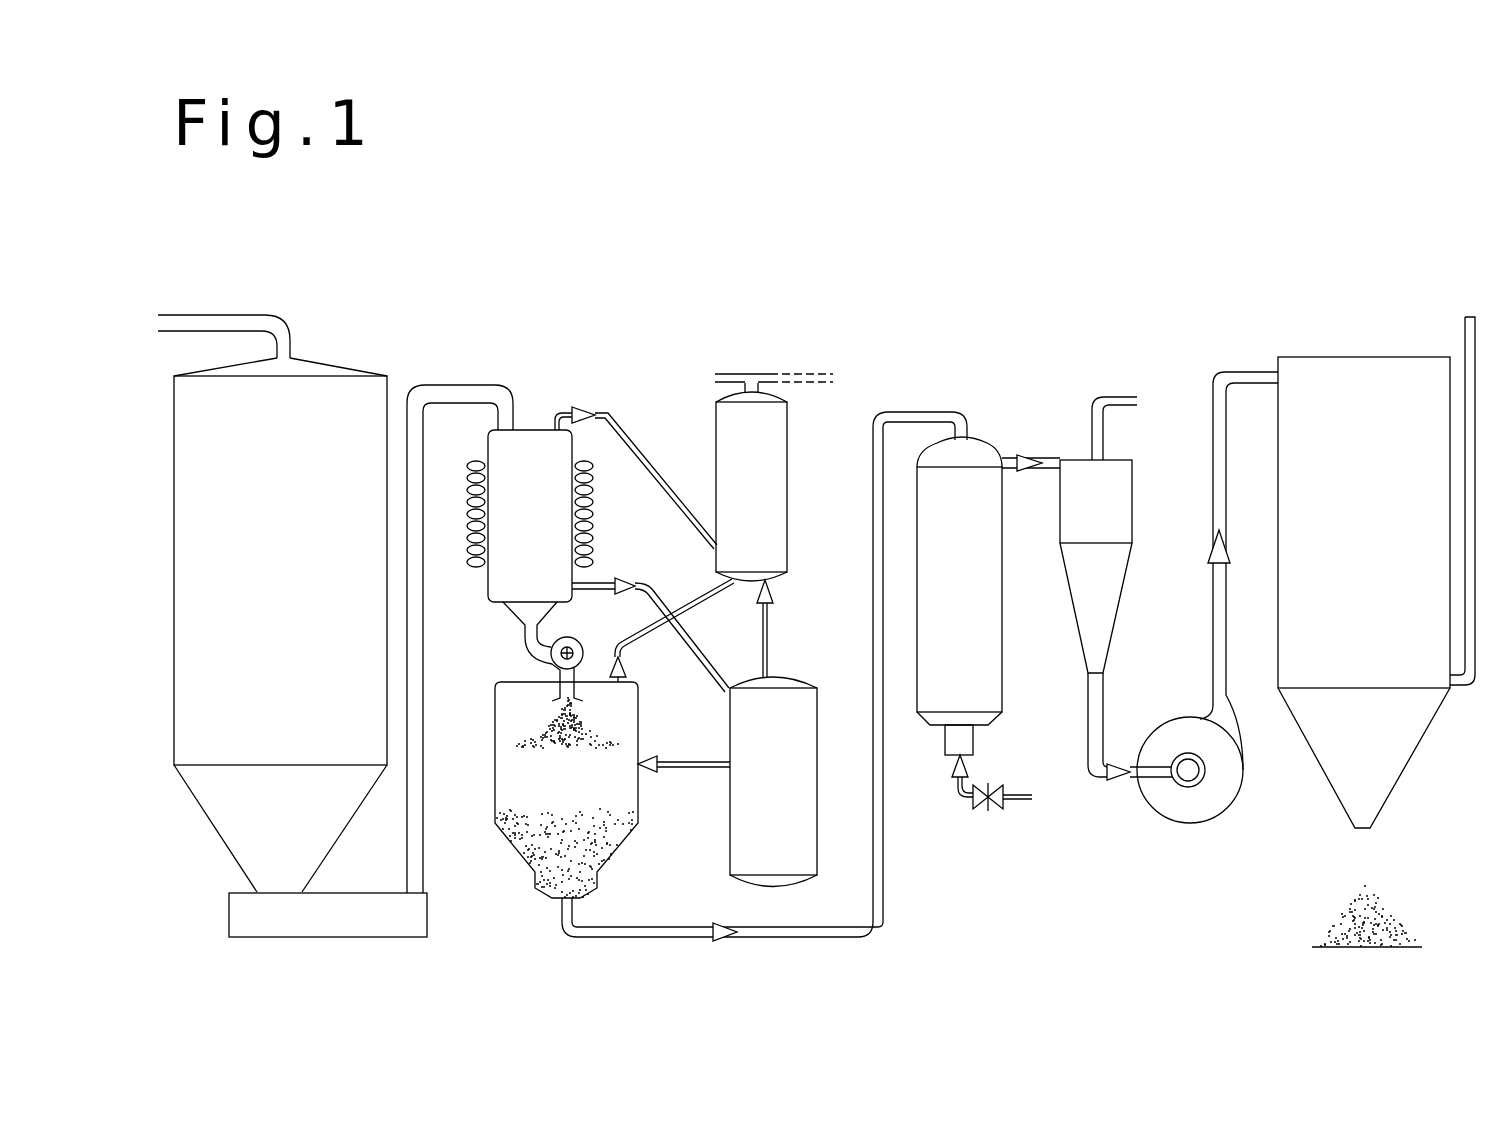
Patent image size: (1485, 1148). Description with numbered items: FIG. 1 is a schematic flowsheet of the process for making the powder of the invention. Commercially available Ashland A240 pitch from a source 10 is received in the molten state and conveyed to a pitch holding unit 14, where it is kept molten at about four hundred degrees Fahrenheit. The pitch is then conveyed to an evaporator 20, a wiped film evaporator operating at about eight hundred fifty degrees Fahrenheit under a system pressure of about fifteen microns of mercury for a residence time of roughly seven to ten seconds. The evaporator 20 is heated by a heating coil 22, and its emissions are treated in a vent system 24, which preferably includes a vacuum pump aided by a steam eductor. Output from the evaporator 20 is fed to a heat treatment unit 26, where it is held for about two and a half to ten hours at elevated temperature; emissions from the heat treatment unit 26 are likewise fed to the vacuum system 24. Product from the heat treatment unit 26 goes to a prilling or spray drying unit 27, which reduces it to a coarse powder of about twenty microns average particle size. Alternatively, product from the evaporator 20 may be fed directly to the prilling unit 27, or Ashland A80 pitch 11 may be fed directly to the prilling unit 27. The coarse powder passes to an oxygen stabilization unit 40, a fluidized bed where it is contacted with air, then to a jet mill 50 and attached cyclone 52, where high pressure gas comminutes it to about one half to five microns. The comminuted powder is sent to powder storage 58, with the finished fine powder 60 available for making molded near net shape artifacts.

The source 10 is at (224, 307).
The Ashland A80 pitch 11 is at (634, 584).
The pitch holding unit 14 is at (300, 647).
The evaporator 20 is at (535, 565).
The heating coil 22 is at (470, 568).
The vent system 24 is at (774, 477).
The heat treatment unit 26 is at (773, 782).
The prilling unit 27 is at (566, 790).
The oxygen stabilization unit 40 is at (974, 624).
The jet mill 50 is at (1190, 786).
The cyclone 52 is at (1116, 588).
The powder storage 58 is at (1376, 572).
The product pile 60 is at (1345, 916).